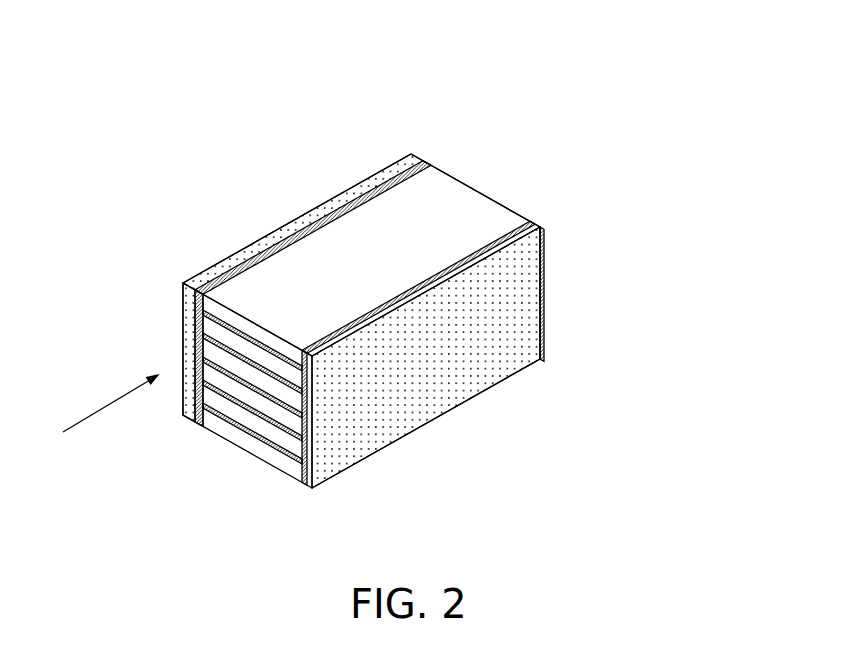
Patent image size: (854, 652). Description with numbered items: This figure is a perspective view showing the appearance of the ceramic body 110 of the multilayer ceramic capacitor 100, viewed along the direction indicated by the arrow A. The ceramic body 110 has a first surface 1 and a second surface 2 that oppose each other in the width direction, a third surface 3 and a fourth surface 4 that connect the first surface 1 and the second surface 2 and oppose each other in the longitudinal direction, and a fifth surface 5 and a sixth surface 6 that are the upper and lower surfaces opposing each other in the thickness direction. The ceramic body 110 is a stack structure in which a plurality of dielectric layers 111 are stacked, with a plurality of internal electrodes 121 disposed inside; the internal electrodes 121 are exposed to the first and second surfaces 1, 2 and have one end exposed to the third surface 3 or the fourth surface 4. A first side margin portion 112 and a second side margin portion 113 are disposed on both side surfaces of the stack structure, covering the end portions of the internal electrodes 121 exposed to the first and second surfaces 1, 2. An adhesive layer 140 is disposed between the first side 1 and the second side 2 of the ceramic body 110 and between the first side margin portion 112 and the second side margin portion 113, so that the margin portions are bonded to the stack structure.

The multilayer ceramic capacitor 100 is at (218, 58).
The first surface 1 is at (293, 221).
The second surface 2 is at (470, 342).
The third surface 3 is at (245, 446).
The fourth surface 4 is at (503, 197).
The fifth surface 5 is at (418, 239).
The sixth surface 6 is at (362, 460).
The ceramic body 110 is at (373, 220).
The dielectric layer 111 is at (300, 461).
The first side margin portion 112 is at (411, 154).
The second side margin portion 113 is at (540, 228).
The internal electrode 121 is at (220, 395).
The adhesive layer 140 is at (425, 160).
The viewing direction A is at (101, 412).